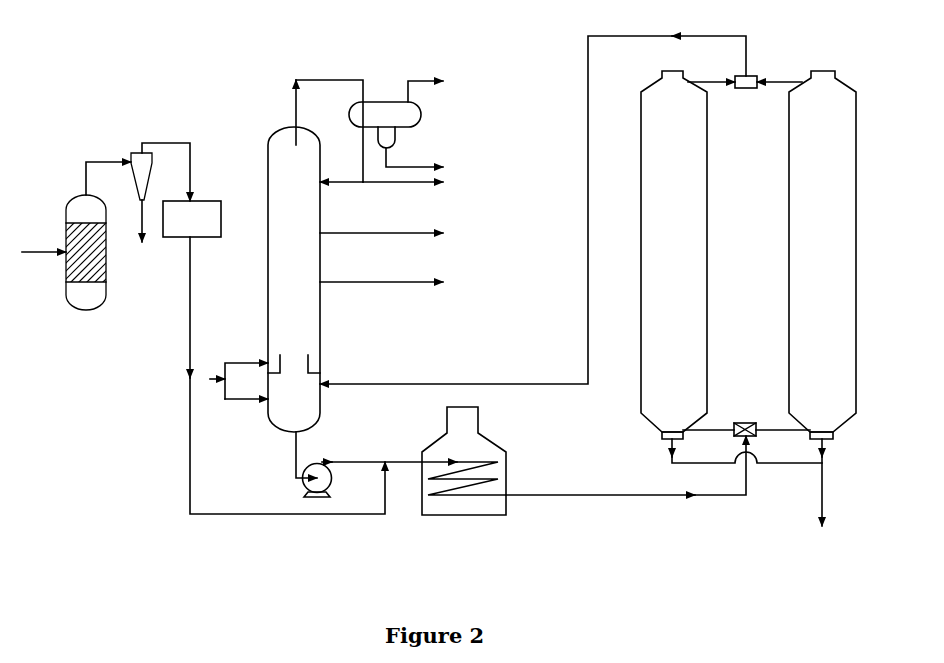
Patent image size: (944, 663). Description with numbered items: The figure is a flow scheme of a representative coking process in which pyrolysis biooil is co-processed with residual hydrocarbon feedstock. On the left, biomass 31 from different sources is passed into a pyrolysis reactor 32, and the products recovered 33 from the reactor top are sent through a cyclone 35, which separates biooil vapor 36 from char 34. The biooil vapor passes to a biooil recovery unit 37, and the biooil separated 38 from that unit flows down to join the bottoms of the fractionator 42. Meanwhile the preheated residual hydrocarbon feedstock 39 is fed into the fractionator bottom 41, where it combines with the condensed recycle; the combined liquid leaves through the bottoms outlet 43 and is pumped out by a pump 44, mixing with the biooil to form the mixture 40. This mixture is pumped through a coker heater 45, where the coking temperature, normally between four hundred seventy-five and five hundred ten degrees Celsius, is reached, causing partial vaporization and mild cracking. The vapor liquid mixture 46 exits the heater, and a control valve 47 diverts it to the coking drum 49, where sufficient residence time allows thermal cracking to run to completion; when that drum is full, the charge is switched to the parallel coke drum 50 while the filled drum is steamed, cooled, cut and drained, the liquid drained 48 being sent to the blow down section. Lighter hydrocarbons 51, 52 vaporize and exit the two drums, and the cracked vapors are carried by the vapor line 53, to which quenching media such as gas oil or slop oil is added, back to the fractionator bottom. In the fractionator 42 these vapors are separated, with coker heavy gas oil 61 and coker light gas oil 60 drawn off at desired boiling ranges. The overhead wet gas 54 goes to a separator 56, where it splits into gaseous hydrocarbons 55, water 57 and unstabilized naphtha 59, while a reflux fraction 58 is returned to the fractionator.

The biomass 31 is at (36, 252).
The pyrolysis reactor 32 is at (94, 310).
The products recovered 33 is at (97, 162).
The char 34 is at (140, 222).
The cyclone 35 is at (150, 170).
The biooil vapor 36 is at (190, 165).
The biooil recovery unit 37 is at (221, 222).
The biooil separated 38 is at (189, 305).
The preheated residual hydrocarbon feedstock 39 is at (213, 384).
The mixture 40 is at (386, 462).
The fractionator bottom 41 is at (241, 363).
The fractionator 42 is at (268, 290).
The column bottoms line 43 is at (296, 450).
The pump 44 is at (331, 480).
The coker heater 45 is at (505, 452).
The vapor liquid mixture 46 is at (677, 491).
The control valve 47 is at (749, 422).
The liquid drained 48 is at (824, 488).
The coking drum 49 is at (707, 262).
The parallel coke drum 50 is at (788, 254).
The lighter hydrocarbons 51 is at (703, 80).
The lighter hydrocarbons 52 is at (780, 80).
The vapor line 53 is at (590, 252).
The wet gas 54 is at (329, 123).
The gaseous hydrocarbons 55 is at (428, 80).
The separator 56 is at (421, 115).
The water 57 is at (411, 166).
The reflux fraction 58 is at (340, 181).
The unstabilized naphtha 59 is at (428, 184).
The coker light gas oil 60 is at (417, 232).
The coker heavy gas oil 61 is at (425, 281).